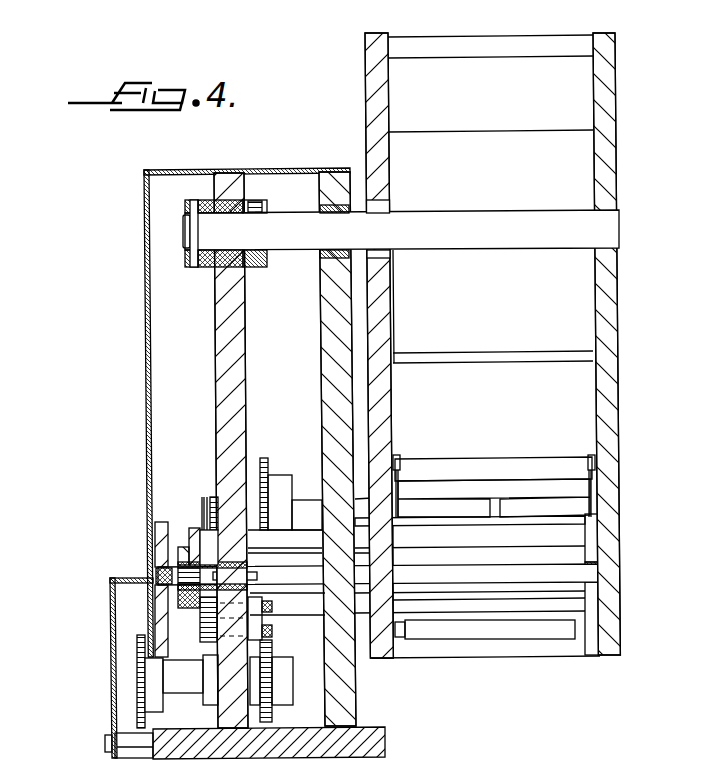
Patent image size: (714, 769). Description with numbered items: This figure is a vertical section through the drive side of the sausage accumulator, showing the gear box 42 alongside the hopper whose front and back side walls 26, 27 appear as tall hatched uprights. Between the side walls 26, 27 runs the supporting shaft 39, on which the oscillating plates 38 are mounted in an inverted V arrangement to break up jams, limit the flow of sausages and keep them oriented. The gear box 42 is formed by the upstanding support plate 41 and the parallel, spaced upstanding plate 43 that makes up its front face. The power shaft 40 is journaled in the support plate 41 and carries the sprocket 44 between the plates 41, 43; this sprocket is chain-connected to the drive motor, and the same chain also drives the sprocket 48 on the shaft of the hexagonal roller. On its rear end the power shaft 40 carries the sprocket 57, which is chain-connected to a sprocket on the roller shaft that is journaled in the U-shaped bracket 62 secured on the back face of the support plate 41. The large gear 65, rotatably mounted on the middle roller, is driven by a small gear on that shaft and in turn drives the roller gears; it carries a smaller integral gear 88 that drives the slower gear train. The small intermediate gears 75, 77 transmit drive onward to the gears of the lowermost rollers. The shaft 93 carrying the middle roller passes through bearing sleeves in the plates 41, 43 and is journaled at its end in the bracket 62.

The front side wall 26 is at (366, 133).
The back side wall 27 is at (612, 530).
The oscillating plates 38 is at (490, 311).
The supporting shaft 39 is at (477, 213).
The power shaft 40 is at (183, 690).
The support plate 41 is at (241, 344).
The gear box 42 is at (142, 237).
The upstanding plate 43 is at (322, 290).
The sprocket 44 is at (268, 648).
The sprocket 48 is at (265, 458).
The sprocket 57 is at (142, 635).
The U-shaped bracket 62 is at (157, 524).
The large gear 65 is at (192, 528).
The small intermediate gear 75 is at (207, 642).
The small intermediate gear 77 is at (200, 618).
The smaller integral gear 88 is at (184, 546).
The shaft 93 is at (160, 575).